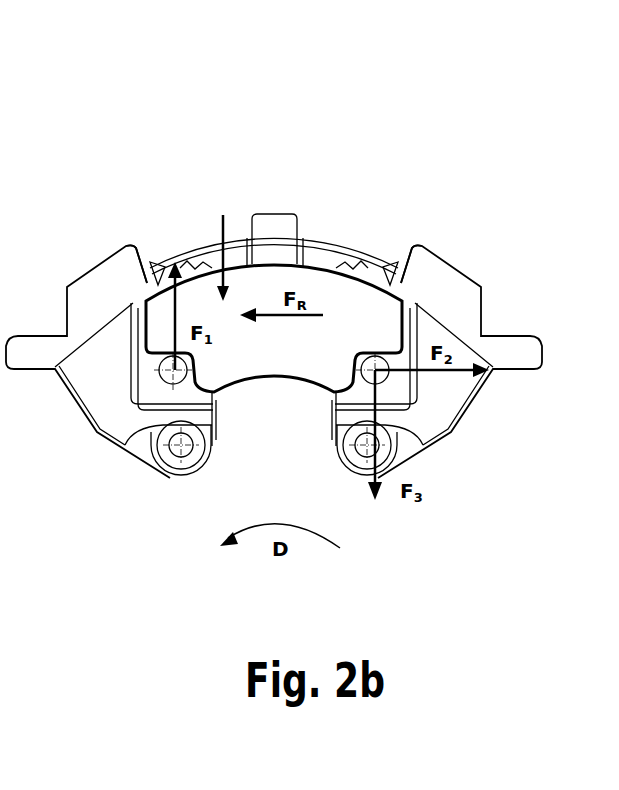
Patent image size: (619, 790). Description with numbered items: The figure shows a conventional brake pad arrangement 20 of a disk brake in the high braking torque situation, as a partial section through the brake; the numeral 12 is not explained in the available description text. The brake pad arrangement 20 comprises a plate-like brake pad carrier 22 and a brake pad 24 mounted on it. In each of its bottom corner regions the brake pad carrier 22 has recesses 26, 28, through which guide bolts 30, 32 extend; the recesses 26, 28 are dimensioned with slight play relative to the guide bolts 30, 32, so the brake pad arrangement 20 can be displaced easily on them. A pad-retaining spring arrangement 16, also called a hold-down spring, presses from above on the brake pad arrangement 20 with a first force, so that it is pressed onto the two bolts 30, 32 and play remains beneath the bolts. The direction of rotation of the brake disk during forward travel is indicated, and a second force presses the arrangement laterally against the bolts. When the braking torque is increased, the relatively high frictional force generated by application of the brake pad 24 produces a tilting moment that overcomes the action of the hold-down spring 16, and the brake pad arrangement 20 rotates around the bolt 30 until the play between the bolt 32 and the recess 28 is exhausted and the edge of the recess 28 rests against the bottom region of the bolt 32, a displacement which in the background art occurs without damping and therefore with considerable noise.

The brake carrier / caliper bracket 12 is at (428, 275).
The pad-retaining spring arrangement 16 is at (330, 255).
The brake pad arrangement 20 is at (223, 215).
The brake pad carrier 22 is at (157, 388).
The brake pad 24 is at (263, 283).
The recess 26 is at (185, 387).
The recess 28 is at (367, 357).
The guide bolt 30 is at (170, 355).
The guide bolt 32 is at (400, 355).